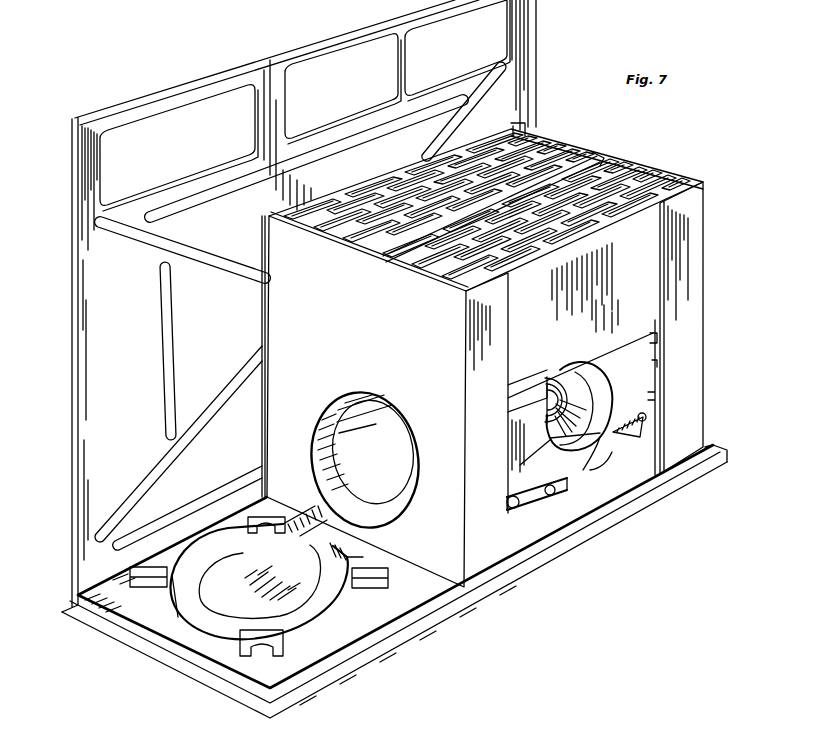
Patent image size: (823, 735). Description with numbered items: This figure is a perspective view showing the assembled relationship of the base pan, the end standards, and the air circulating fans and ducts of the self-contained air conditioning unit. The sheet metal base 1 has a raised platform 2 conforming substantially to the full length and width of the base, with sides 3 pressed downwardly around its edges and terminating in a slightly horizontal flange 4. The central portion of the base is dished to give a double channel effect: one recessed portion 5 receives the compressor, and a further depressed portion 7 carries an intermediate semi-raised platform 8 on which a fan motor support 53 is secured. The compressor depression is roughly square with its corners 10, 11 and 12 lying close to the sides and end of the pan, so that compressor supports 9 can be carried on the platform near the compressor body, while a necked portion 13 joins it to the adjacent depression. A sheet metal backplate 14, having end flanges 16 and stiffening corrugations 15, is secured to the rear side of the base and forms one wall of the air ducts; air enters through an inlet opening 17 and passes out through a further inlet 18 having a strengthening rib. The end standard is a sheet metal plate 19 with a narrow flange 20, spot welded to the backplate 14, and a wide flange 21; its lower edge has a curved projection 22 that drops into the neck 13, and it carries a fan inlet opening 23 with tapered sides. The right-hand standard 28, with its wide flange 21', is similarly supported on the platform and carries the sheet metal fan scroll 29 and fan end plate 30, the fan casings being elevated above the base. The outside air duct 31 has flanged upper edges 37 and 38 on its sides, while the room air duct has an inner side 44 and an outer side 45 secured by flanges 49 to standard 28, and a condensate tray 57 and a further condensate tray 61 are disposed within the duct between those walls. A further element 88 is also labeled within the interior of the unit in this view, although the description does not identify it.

The base 1 is at (394, 581).
The raised platform 2 is at (607, 492).
The sides 3 is at (604, 516).
The horizontal flange 4 is at (590, 538).
The recessed portion 5 is at (316, 597).
The recessed portion 7 is at (600, 465).
The semi-raised platform 8 is at (548, 501).
The compressor supports 9 is at (283, 508).
The corner of depression 10 is at (288, 578).
The corner of depression 11 is at (170, 617).
The corner of depression 12 is at (193, 545).
The necked portion 13 is at (363, 557).
The backplate 14 is at (548, 55).
The stiffening corrugations 15 is at (379, 135).
The end flanges 16 is at (533, 21).
The inlet opening 17 is at (166, 113).
The inlet 18 is at (340, 53).
The sheet metal plate 19 is at (434, 578).
The narrow flange 20 is at (484, 348).
The wide flange 21 is at (353, 399).
The wide flange 21' is at (696, 328).
The curved projection 22 is at (335, 540).
The fan inlet opening 23 is at (418, 452).
The end standard 28 is at (696, 328).
The fan scroll 29 is at (628, 437).
The fan end plate 30 is at (601, 404).
The air duct 31 is at (414, 172).
The flanged edge 37 is at (486, 200).
The flanged edge 38 is at (497, 132).
The inner side 44 is at (597, 157).
The outer side 45 is at (525, 363).
The flanges 49 is at (606, 158).
The fan motor support 53 is at (530, 465).
The condensate tray 57 is at (627, 192).
The condensate tray 61 is at (531, 150).
The shelf 88 is at (525, 402).